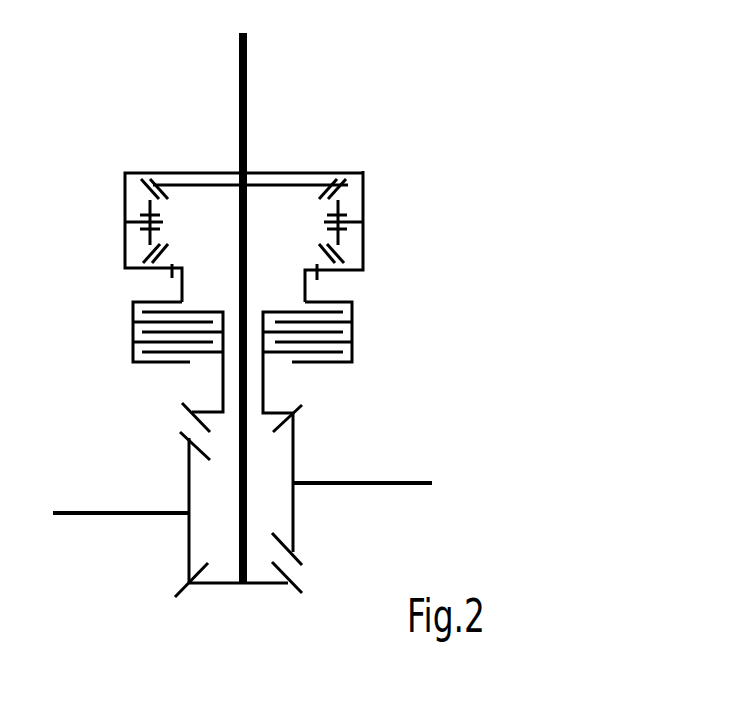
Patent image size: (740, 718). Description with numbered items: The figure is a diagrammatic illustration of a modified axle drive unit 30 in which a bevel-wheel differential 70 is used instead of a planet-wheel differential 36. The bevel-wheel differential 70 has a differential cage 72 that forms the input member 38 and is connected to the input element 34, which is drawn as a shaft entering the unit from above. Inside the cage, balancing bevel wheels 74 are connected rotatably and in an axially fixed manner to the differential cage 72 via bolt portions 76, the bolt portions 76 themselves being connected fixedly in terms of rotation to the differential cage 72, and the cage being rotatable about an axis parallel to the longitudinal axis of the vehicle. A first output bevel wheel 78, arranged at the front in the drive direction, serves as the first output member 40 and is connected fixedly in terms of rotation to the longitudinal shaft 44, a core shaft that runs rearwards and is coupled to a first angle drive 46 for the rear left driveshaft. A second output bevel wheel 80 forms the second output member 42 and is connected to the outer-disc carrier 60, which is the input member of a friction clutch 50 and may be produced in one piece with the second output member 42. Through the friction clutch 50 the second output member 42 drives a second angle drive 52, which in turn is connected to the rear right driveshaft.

The axle drive unit 30 is at (581, 98).
The input element 34 is at (247, 93).
The bevel-wheel differential 70 is at (295, 197).
The planet-wheel differential 36 is at (368, 166).
The differential cage 72 is at (438, 236).
The input member 38 is at (366, 193).
The first output bevel wheel 78 is at (214, 132).
The first output member 40 is at (190, 177).
The second output bevel wheel 80 is at (319, 186).
The second output member 42 is at (313, 252).
The bolt portions 76 is at (130, 215).
The balancing bevel wheels 74 is at (147, 238).
The friction clutch 50 is at (376, 328).
The outer-disc carrier 60 is at (356, 307).
The second angle drive 52 is at (312, 428).
The first angle drive 46 is at (170, 580).
The longitudinal shaft 44 is at (244, 513).